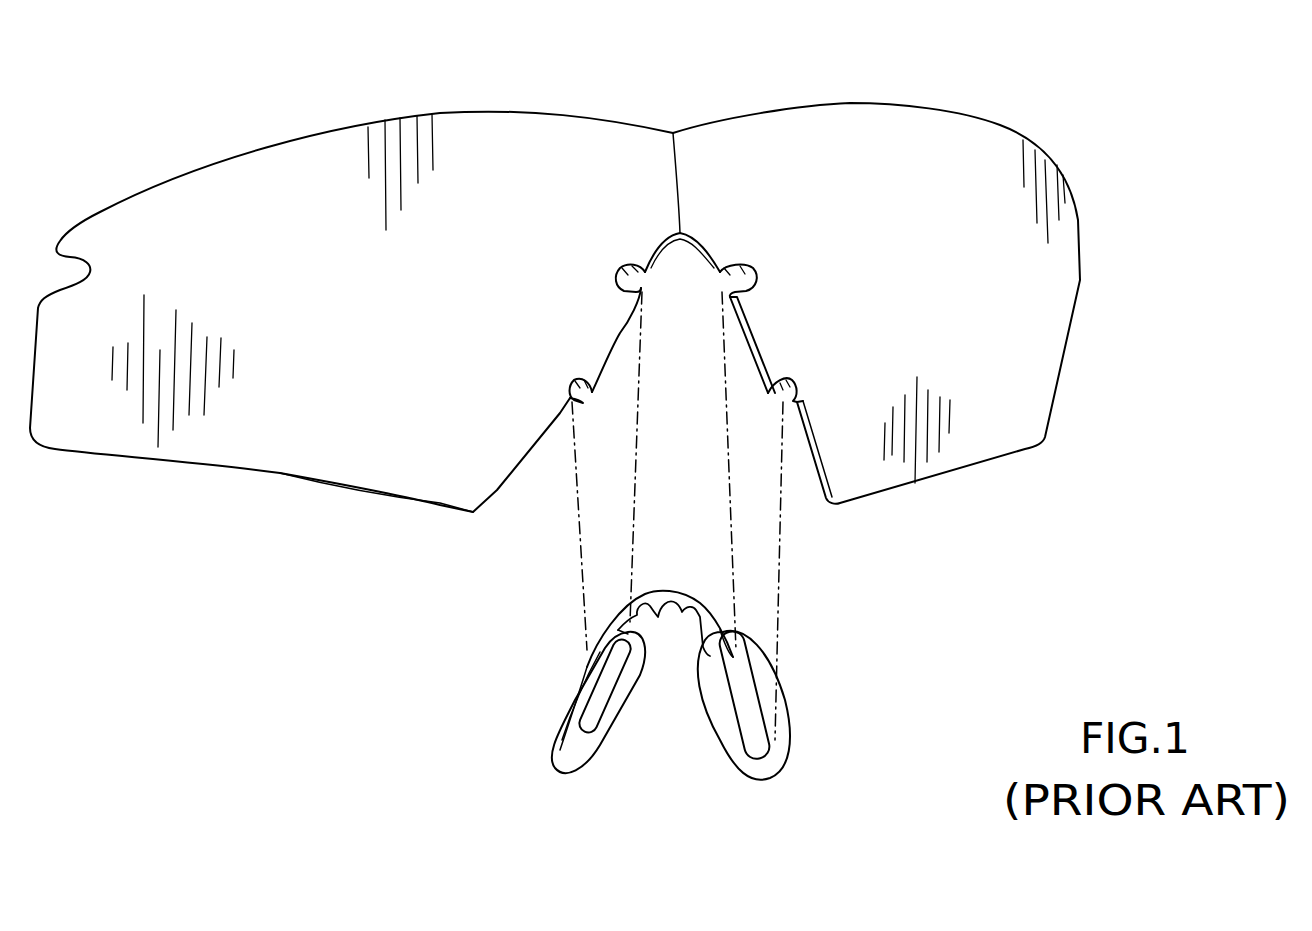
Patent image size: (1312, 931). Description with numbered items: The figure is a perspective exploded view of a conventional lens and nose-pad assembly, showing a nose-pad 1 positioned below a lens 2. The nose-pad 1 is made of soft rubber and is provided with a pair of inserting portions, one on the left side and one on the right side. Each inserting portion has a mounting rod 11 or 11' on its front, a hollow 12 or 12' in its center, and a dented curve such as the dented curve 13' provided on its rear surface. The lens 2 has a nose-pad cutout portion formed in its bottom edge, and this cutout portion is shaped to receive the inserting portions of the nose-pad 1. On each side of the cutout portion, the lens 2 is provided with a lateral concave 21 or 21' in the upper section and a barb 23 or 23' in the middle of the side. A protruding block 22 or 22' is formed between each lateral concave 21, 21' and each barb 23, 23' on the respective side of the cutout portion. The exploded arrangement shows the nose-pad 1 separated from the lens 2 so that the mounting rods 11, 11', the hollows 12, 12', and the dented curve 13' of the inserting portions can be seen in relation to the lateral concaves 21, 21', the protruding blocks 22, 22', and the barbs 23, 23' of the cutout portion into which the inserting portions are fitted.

The nose-pad 1 is at (783, 700).
The mounting rod 11 is at (806, 722).
The mounting rod 11' is at (552, 755).
The hollow 12 is at (711, 737).
The hollow 12' is at (547, 701).
The dented curve 13' is at (521, 683).
The lens 2 is at (810, 100).
The lateral concave 21 is at (797, 251).
The lateral concave 21' is at (569, 261).
The protruding block 22 is at (813, 329).
The protruding block 22' is at (563, 333).
The barb 23 is at (851, 354).
The barb 23' is at (517, 371).